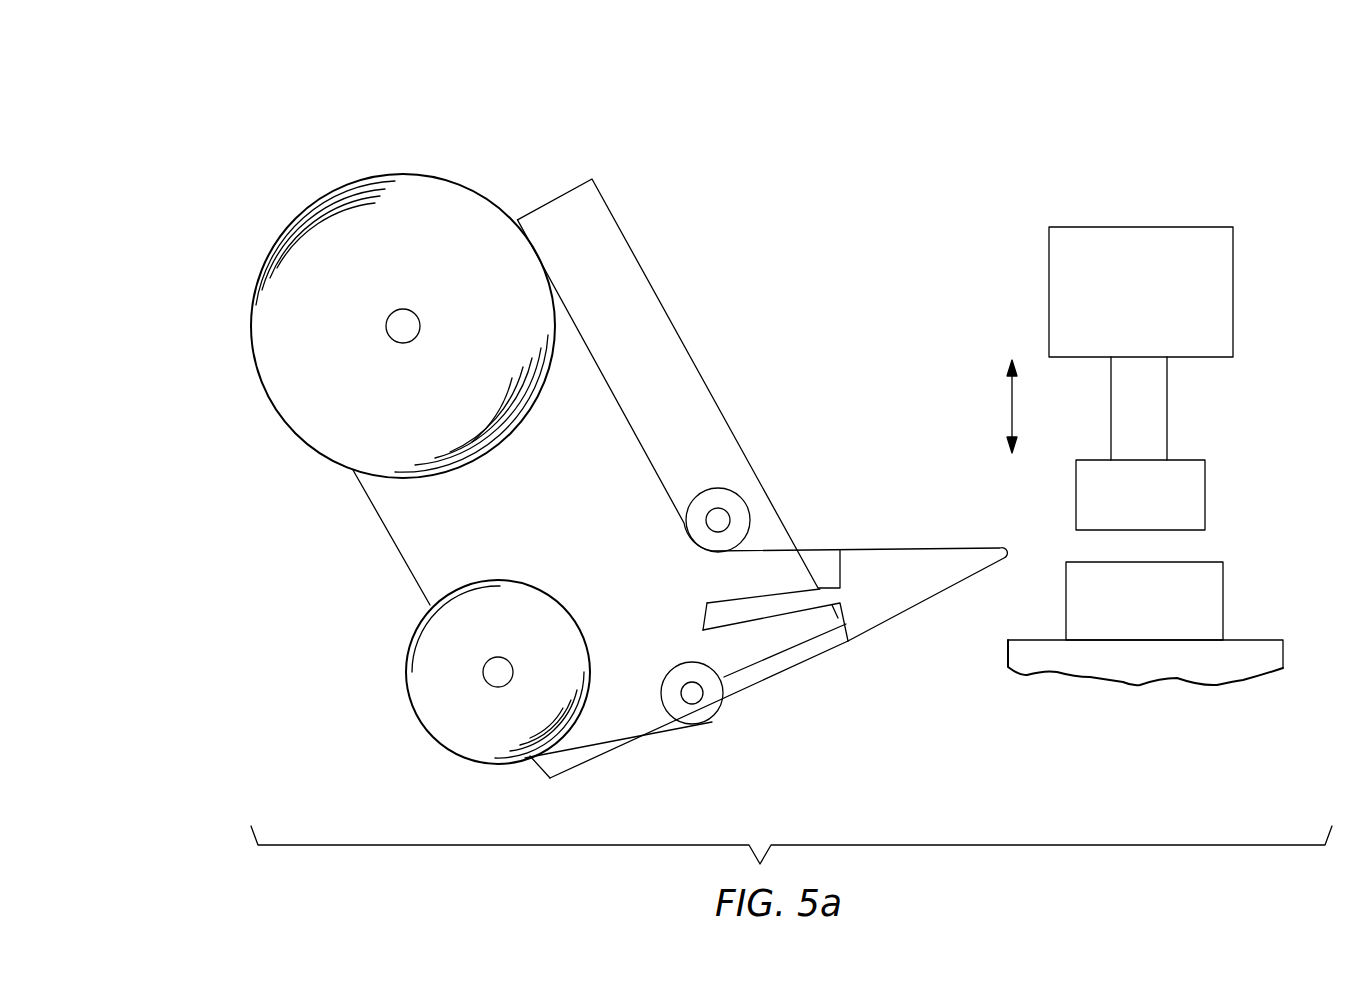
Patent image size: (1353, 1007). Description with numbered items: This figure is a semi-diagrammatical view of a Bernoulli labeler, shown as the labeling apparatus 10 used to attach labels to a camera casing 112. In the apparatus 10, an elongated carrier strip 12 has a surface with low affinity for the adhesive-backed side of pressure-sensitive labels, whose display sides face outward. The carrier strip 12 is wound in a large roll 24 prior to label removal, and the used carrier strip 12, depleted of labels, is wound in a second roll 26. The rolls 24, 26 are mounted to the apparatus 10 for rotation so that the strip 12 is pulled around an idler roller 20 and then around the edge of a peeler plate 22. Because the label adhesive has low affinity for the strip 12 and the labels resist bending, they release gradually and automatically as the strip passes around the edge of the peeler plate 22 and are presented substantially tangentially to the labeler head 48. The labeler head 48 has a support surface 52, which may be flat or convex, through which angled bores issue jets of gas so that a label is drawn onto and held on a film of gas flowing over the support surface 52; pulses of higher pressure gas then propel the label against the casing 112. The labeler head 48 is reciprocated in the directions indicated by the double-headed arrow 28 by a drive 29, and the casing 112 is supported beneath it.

The labeling apparatus 10 is at (848, 152).
The carrier strip 12 is at (633, 425).
The idler roller 20 is at (738, 502).
The peeler plate 22 is at (890, 615).
The roll 24 is at (445, 192).
The roll 26 is at (448, 748).
The double-headed arrow 28 is at (1010, 405).
The drive 29 is at (1236, 302).
The labeler head 48 is at (1206, 488).
The support surface 52 is at (1198, 685).
The casing 112 is at (1223, 600).